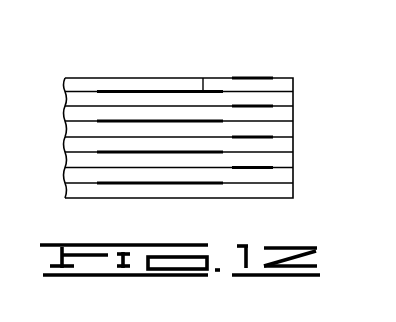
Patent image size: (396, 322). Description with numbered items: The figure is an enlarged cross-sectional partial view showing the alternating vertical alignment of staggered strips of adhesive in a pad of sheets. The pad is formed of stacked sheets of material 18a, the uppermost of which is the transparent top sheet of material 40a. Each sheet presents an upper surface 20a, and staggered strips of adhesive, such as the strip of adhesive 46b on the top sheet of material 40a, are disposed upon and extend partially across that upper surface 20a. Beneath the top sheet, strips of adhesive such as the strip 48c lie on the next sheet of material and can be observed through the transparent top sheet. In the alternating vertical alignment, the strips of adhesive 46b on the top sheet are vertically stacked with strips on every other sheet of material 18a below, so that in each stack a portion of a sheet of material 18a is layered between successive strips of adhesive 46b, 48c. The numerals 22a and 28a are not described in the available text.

The sheet of material 18a is at (222, 77).
The upper surface 20a is at (182, 78).
The second conductive layer 22a is at (170, 198).
The dielectric body 28a is at (293, 87).
The top sheet of material 40a is at (110, 78).
The staggered strip of adhesive 46b is at (260, 78).
The staggered strip of adhesive 48c is at (203, 78).